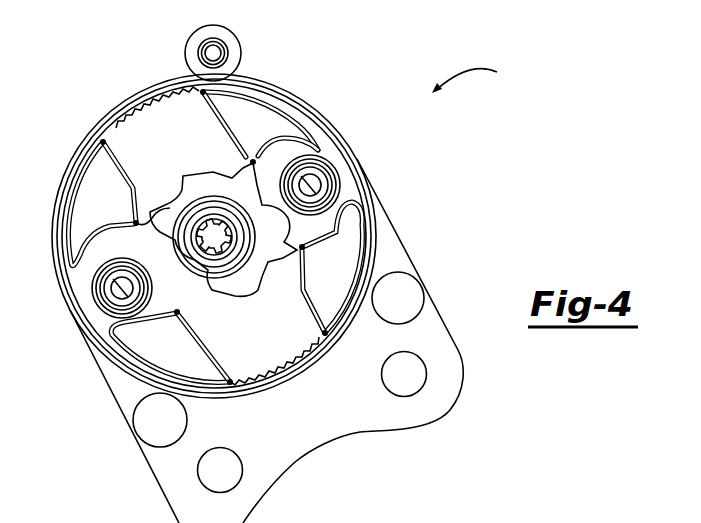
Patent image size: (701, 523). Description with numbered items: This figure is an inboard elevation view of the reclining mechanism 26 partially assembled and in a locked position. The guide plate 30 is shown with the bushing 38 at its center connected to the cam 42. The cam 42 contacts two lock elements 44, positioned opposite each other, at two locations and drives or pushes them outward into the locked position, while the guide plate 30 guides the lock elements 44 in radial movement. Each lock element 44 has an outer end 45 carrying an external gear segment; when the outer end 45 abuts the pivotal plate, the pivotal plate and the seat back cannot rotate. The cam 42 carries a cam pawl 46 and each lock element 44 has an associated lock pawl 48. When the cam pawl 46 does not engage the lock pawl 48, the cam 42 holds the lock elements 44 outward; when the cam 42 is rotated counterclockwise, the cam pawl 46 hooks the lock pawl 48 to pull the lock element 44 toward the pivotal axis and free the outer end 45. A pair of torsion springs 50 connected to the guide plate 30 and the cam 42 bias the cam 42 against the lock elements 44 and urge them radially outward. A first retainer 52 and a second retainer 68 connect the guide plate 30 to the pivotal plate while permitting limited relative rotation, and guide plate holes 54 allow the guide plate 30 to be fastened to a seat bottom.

The reclining mechanism 26 is at (475, 77).
The guide plate 30 is at (303, 440).
The bushing 38 is at (226, 214).
The cam 42 is at (253, 157).
The lock elements 44 is at (128, 137).
The outer end 45 is at (157, 97).
The cam pawl 46 is at (183, 180).
The lock pawl 48 is at (134, 220).
The torsion springs 50 is at (336, 178).
The first retainer 52 is at (242, 55).
The guide plate holes 54 is at (210, 477).
The second retainer 68 is at (155, 420).